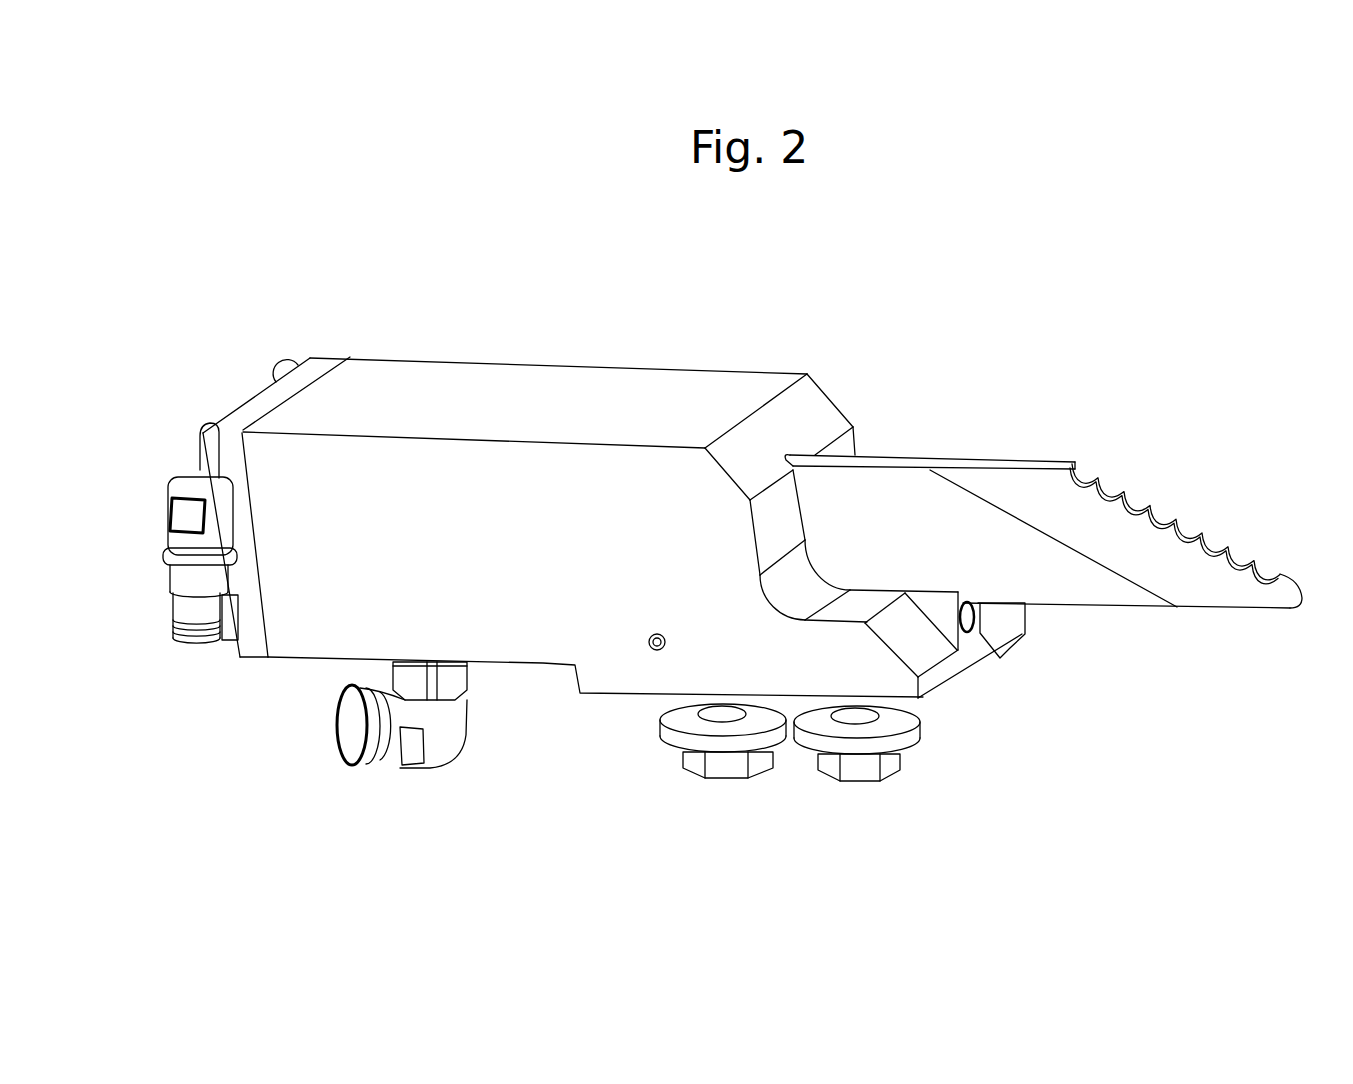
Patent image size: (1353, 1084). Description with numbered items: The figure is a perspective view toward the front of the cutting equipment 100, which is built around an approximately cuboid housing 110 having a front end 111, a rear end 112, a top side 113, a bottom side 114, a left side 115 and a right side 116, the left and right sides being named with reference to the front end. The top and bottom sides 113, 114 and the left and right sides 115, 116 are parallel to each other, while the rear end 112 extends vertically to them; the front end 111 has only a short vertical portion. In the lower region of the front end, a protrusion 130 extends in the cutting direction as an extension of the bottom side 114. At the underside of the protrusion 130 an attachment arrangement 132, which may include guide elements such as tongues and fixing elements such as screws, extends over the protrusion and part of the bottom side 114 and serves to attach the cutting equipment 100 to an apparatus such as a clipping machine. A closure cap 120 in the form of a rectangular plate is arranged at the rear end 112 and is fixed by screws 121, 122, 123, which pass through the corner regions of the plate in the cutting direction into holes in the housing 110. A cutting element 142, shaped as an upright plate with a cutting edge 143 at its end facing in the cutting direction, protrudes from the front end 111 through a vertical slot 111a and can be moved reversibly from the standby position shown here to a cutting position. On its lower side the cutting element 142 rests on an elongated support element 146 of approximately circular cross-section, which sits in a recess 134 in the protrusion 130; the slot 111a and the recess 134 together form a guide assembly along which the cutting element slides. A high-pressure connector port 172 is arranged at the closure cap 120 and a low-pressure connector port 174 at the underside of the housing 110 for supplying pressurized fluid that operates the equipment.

The cutting equipment 100 is at (1135, 251).
The housing 110 is at (713, 319).
The front end 111 is at (853, 430).
The vertical slot 111a is at (790, 456).
The rear end 112 is at (315, 372).
The top side 113 is at (517, 397).
The bottom side 114 is at (544, 687).
The left side 115 is at (451, 487).
The right side 116 is at (611, 347).
The closure cap 120 is at (311, 372).
The screw 121 is at (232, 633).
The screw 122 is at (210, 443).
The screw 123 is at (287, 372).
The protrusion 130 is at (878, 675).
The attachment arrangement 132 is at (769, 807).
The recess 134 is at (967, 620).
The cutting element 142 is at (1043, 562).
The cutting edge 143 is at (1198, 535).
The support element 146 is at (963, 611).
The high-pressure connector port 172 is at (183, 517).
The low-pressure connector port 174 is at (355, 723).